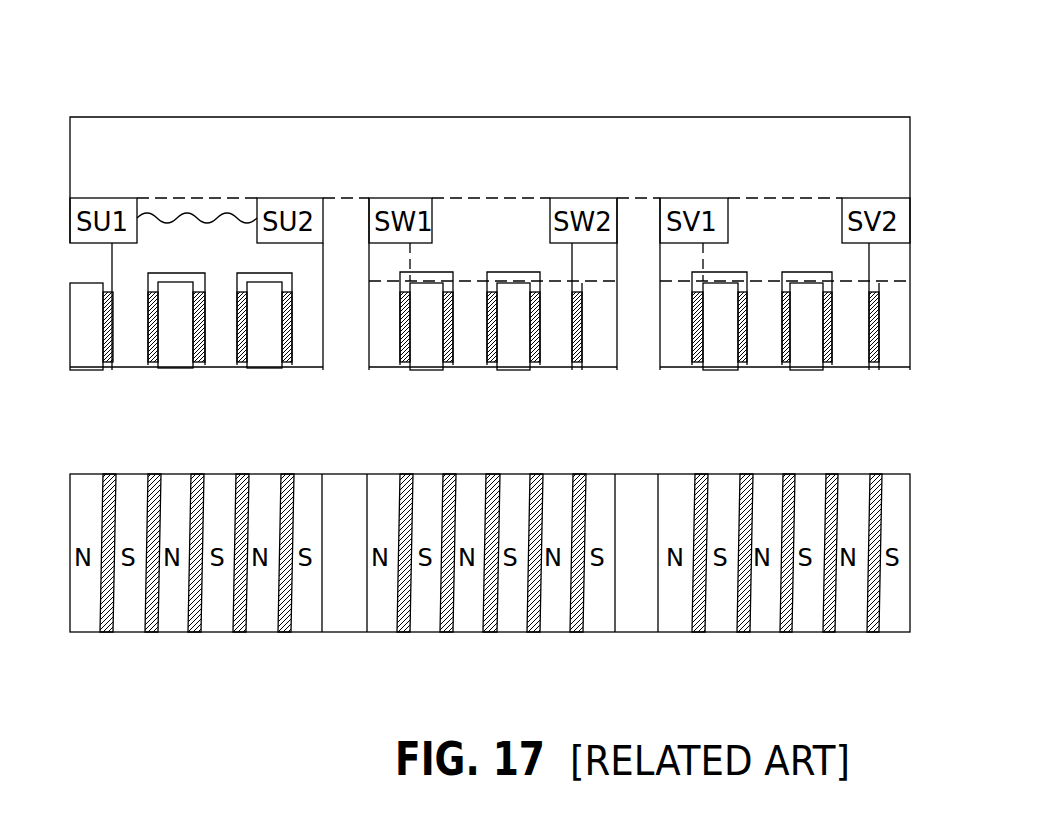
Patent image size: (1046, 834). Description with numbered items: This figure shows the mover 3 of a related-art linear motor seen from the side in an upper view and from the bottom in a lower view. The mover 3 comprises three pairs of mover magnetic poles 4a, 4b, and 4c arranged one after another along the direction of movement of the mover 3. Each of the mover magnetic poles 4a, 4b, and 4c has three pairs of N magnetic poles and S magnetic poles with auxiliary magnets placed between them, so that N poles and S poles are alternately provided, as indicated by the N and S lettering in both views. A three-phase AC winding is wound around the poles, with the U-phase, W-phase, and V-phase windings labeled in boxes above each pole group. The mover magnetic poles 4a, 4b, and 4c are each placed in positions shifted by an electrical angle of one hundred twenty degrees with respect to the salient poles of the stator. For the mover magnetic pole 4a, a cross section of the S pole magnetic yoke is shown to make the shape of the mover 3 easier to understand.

The mover 3 is at (495, 117).
The mover magnetic pole 4a is at (62, 379).
The mover magnetic pole 4b is at (355, 379).
The mover magnetic pole 4c is at (645, 379).